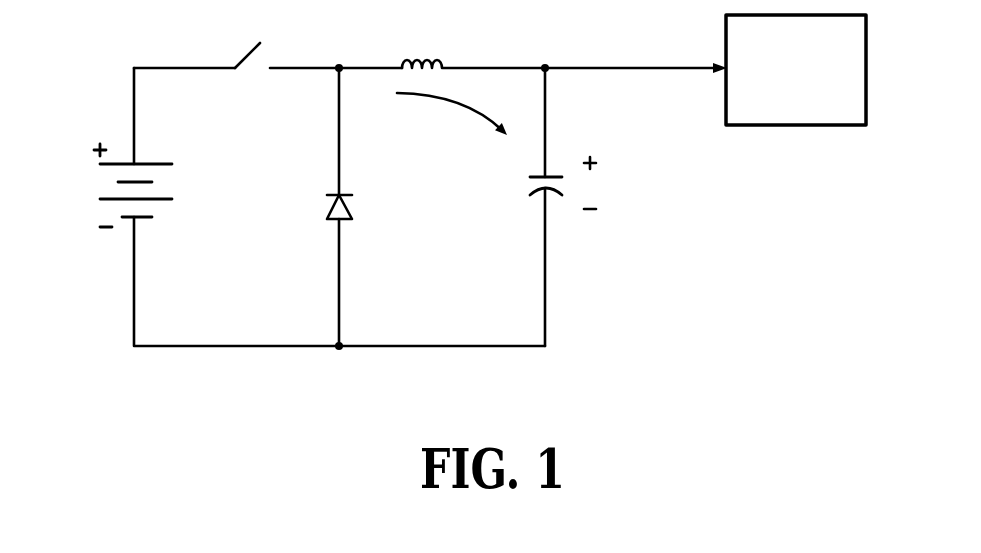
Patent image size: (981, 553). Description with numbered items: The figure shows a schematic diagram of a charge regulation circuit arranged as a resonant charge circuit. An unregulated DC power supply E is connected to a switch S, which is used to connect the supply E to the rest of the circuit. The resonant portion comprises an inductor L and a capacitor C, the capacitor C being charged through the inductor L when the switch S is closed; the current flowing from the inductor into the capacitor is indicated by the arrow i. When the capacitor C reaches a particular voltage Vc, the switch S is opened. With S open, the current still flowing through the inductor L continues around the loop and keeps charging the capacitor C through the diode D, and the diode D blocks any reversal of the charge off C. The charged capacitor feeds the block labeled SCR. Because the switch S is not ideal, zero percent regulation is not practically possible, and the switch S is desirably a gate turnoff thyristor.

The unregulated DC power supply E is at (117, 185).
The switch S is at (242, 50).
The inductor L is at (422, 50).
The charging current i is at (456, 143).
The diode D is at (353, 210).
The capacitor C is at (532, 173).
The capacitor voltage Vc is at (608, 183).
The silicon controlled rectifier load block SCR is at (796, 70).